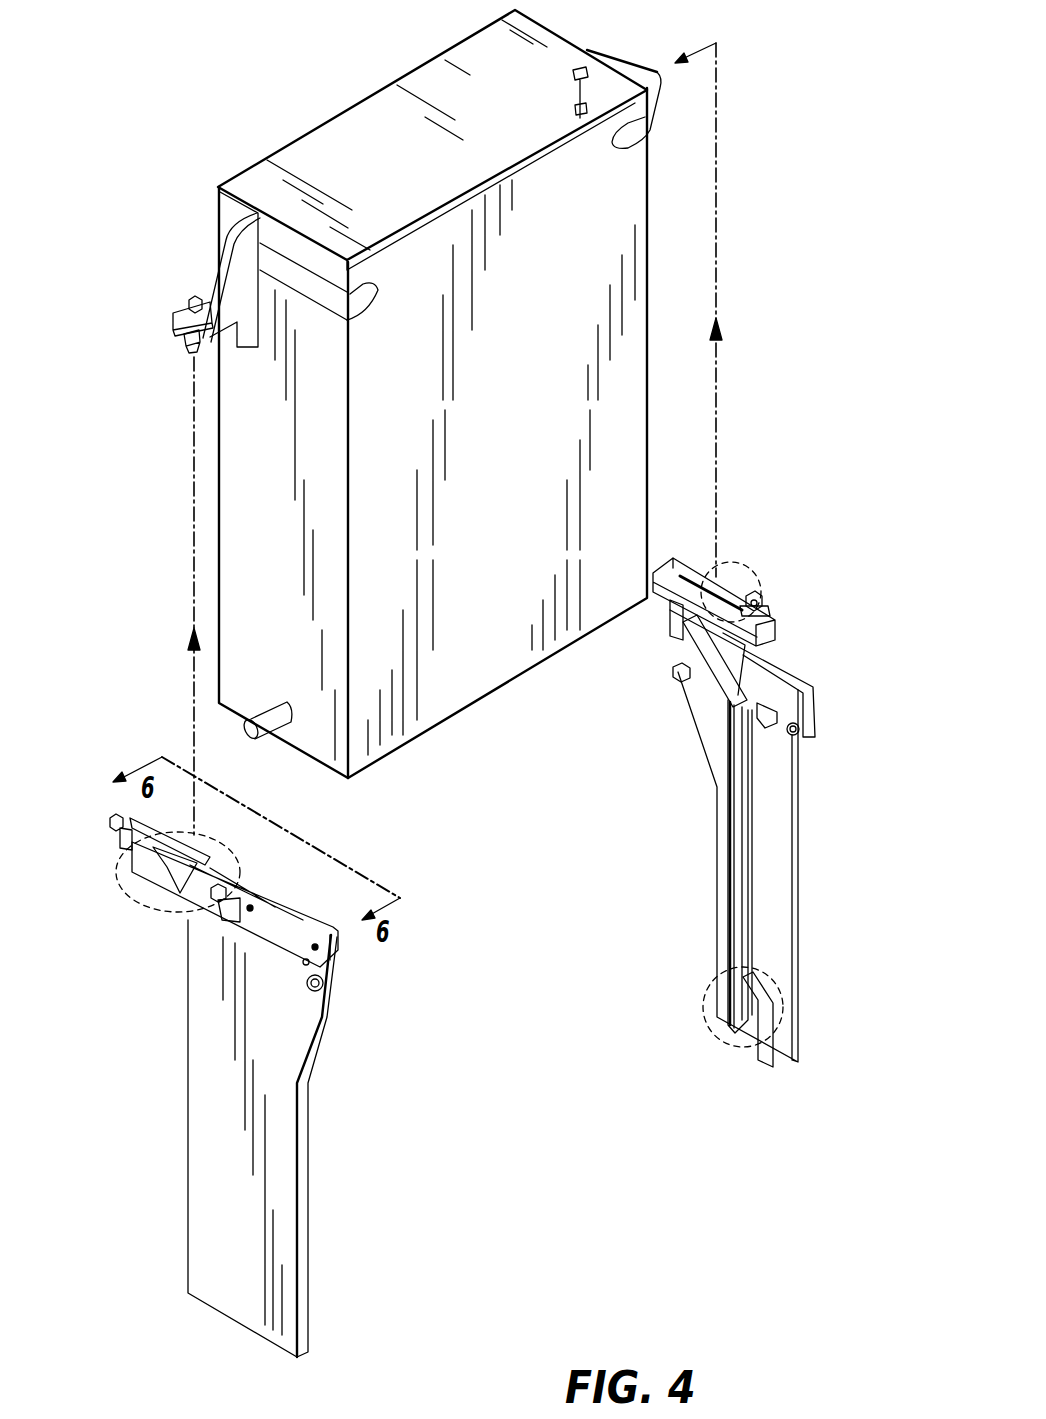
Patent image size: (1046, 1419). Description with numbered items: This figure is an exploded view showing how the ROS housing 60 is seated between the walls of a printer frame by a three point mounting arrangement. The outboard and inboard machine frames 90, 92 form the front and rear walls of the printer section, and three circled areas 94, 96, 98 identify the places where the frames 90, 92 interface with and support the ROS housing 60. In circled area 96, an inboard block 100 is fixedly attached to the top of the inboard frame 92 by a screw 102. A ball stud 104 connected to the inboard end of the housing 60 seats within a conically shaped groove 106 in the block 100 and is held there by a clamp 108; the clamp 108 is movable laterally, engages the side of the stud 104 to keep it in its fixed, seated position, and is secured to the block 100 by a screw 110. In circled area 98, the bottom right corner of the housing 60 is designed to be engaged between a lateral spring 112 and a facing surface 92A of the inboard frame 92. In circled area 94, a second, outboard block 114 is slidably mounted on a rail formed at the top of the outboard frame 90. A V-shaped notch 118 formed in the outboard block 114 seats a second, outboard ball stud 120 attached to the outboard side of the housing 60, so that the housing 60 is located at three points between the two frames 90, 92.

The ROS housing 60 is at (396, 46).
The outboard machine frame 90 is at (195, 1028).
The inboard machine frame 92 is at (797, 813).
The facing surface 92A is at (733, 992).
The circled area 94 is at (205, 832).
The circled area 96 is at (737, 547).
The circled area 98 is at (700, 998).
The inboard block 100 is at (770, 607).
The screw 102 is at (758, 600).
The ball stud 104 is at (587, 48).
The conically shaped groove 106 is at (745, 571).
The clamp 108 is at (691, 560).
The screw 110 is at (667, 590).
The lateral spring 112 is at (712, 1018).
The outboard block 114 is at (143, 865).
The V-shaped notch 118 is at (203, 866).
The outboard ball stud 120 is at (190, 297).